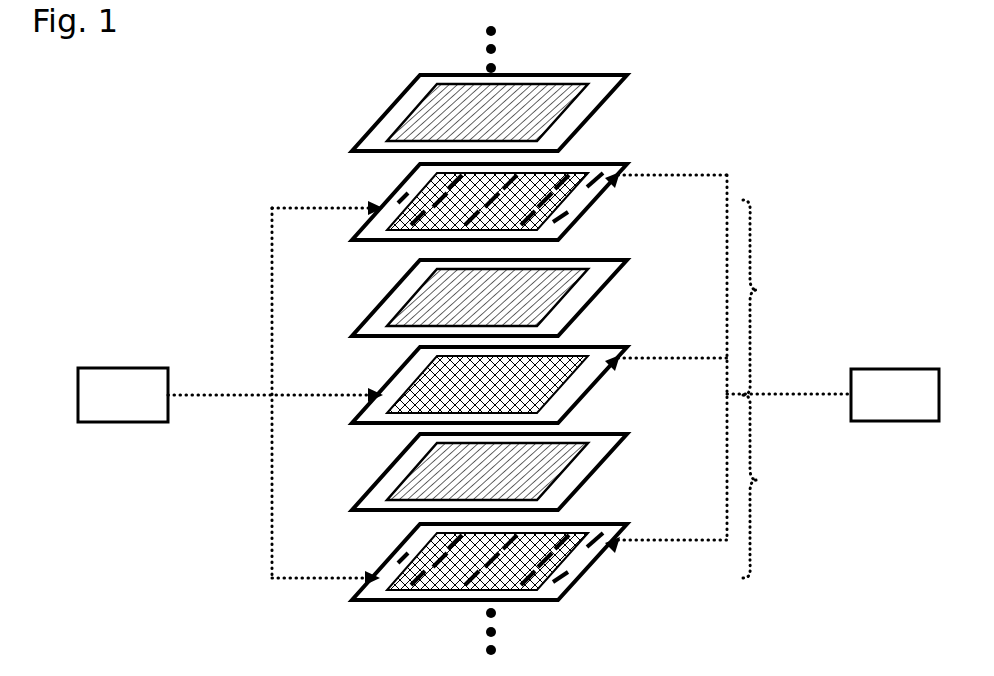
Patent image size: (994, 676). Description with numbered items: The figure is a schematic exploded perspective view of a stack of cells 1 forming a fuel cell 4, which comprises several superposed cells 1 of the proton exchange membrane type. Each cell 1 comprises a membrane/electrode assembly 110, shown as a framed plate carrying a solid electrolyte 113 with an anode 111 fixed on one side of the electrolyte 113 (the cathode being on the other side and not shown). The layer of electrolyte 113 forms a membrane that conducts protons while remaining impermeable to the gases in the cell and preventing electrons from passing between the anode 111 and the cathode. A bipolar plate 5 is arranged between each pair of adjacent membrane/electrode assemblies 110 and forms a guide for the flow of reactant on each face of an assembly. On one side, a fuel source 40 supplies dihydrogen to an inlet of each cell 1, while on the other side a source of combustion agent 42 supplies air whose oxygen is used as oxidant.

The cell 1 is at (769, 389).
The fuel cell 4 is at (583, 340).
The bipolar plate 5 is at (610, 201).
The membrane/electrode assembly 110 is at (604, 113).
The anode 111 is at (413, 110).
The solid electrolyte 113 is at (413, 112).
The fuel source 40 is at (107, 401).
The source of combustion agent 42 is at (879, 402).